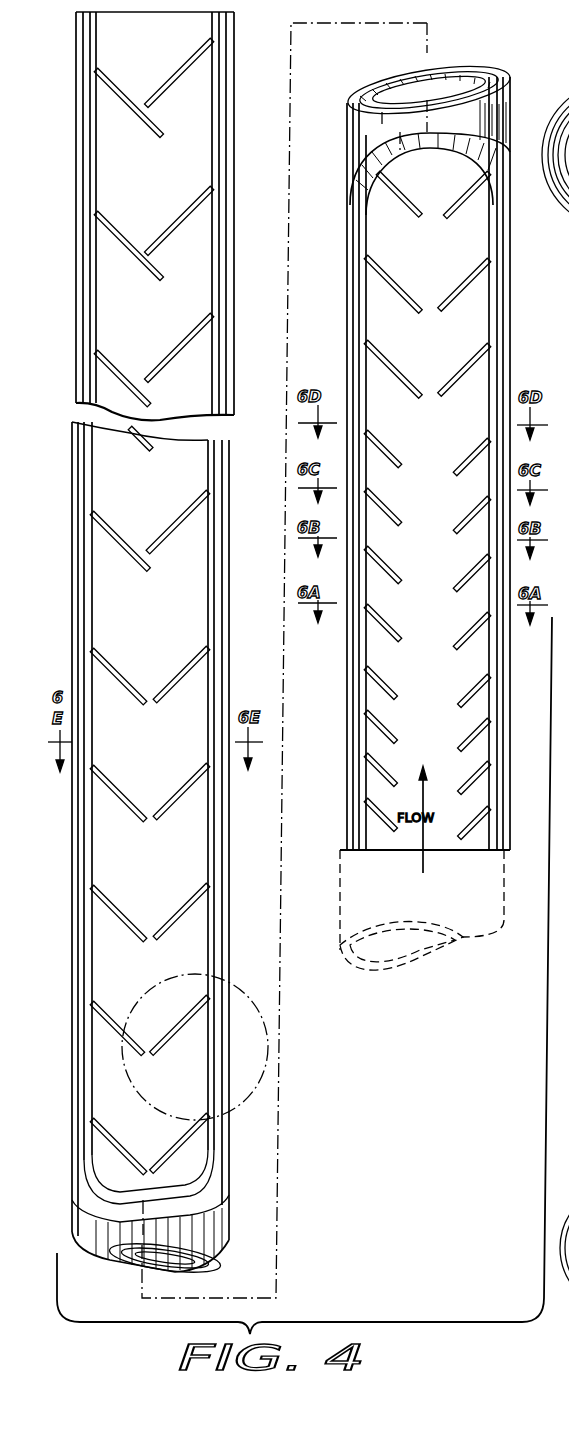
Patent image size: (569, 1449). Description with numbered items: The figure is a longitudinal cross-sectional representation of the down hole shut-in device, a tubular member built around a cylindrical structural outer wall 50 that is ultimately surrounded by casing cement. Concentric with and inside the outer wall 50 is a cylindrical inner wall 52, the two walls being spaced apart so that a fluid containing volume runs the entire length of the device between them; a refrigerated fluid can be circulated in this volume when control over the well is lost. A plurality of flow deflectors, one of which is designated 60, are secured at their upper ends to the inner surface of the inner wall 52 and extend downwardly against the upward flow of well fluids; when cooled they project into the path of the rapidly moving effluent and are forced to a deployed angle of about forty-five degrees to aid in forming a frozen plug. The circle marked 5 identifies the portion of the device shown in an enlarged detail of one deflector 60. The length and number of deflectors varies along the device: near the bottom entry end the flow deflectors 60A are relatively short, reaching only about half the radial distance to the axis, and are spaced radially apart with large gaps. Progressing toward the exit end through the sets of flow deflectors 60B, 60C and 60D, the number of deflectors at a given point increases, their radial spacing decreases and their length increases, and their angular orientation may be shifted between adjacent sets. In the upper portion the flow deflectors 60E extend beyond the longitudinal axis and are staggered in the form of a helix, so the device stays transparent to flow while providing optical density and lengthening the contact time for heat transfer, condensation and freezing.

The outer wall 50 is at (229, 598).
The inner wall 52 is at (207, 601).
The flow deflector 60 is at (180, 1022).
The flow deflectors 60A is at (463, 630).
The flow deflectors 60B is at (463, 572).
The flow deflectors 60C is at (463, 514).
The flow deflectors 60D is at (463, 456).
The flow deflectors 60E is at (178, 793).
The detail circle 5 is at (152, 985).